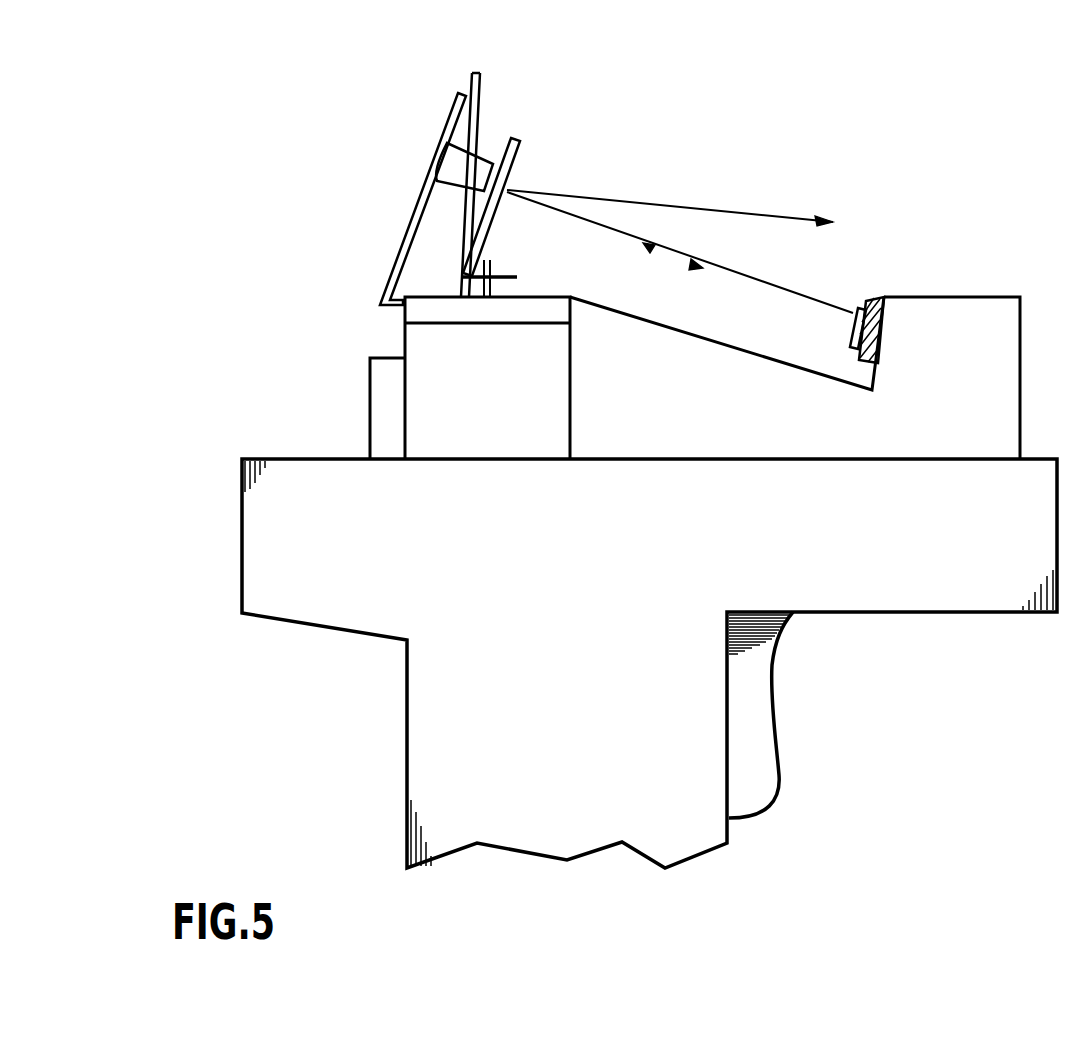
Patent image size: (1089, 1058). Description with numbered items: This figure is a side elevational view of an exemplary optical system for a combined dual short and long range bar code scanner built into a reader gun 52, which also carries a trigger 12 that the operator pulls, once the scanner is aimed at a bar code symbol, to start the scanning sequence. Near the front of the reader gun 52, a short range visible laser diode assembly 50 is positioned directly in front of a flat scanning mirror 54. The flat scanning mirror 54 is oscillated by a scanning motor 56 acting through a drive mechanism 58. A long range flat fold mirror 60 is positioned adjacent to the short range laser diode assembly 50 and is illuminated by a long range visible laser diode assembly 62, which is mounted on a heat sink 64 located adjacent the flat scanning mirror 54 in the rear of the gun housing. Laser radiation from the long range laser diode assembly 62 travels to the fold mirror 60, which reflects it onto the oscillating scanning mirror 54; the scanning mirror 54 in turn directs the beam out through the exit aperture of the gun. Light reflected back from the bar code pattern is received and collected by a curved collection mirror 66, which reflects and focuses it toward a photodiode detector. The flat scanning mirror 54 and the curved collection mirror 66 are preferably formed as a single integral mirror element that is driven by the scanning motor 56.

The trigger 12 is at (778, 669).
The short range visible laser diode assembly 50 is at (860, 312).
The reader gun 52 is at (633, 556).
The flat scanning mirror 54 is at (500, 216).
The scanning motor 56 is at (497, 385).
The drive mechanism 58 is at (497, 262).
The long range flat fold mirror 60 is at (862, 360).
The long range visible laser diode assembly 62 is at (452, 192).
The heat sink 64 is at (448, 121).
The curved collection mirror 66 is at (518, 160).